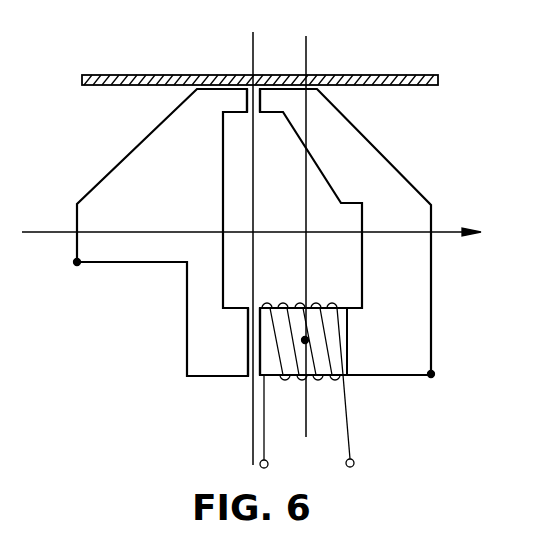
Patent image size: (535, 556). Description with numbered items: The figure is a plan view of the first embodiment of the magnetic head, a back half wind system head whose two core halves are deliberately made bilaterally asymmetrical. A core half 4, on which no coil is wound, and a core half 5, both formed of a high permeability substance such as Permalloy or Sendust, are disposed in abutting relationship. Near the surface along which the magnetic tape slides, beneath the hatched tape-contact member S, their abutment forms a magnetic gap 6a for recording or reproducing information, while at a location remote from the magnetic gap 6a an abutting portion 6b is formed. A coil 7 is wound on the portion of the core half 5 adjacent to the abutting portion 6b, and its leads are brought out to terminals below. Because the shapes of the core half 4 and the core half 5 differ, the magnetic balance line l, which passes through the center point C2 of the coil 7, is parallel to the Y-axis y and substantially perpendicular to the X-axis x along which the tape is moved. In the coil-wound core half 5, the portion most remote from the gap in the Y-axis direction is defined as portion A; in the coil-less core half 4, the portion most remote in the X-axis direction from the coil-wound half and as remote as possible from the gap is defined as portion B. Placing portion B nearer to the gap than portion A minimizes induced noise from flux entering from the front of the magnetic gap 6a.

The scale (hatched bar) S is at (220, 88).
The core half 4 is at (200, 369).
The core half 5 is at (382, 367).
The magnetic gap 6a is at (258, 100).
The abutting portion 6b is at (248, 372).
The coil 7 is at (341, 322).
The center point of the coil C2 is at (305, 340).
The portion A is at (434, 375).
The portion B is at (74, 264).
The X-axis x is at (258, 233).
The Y-axis y is at (252, 235).
The magnetic balance line l is at (309, 53).